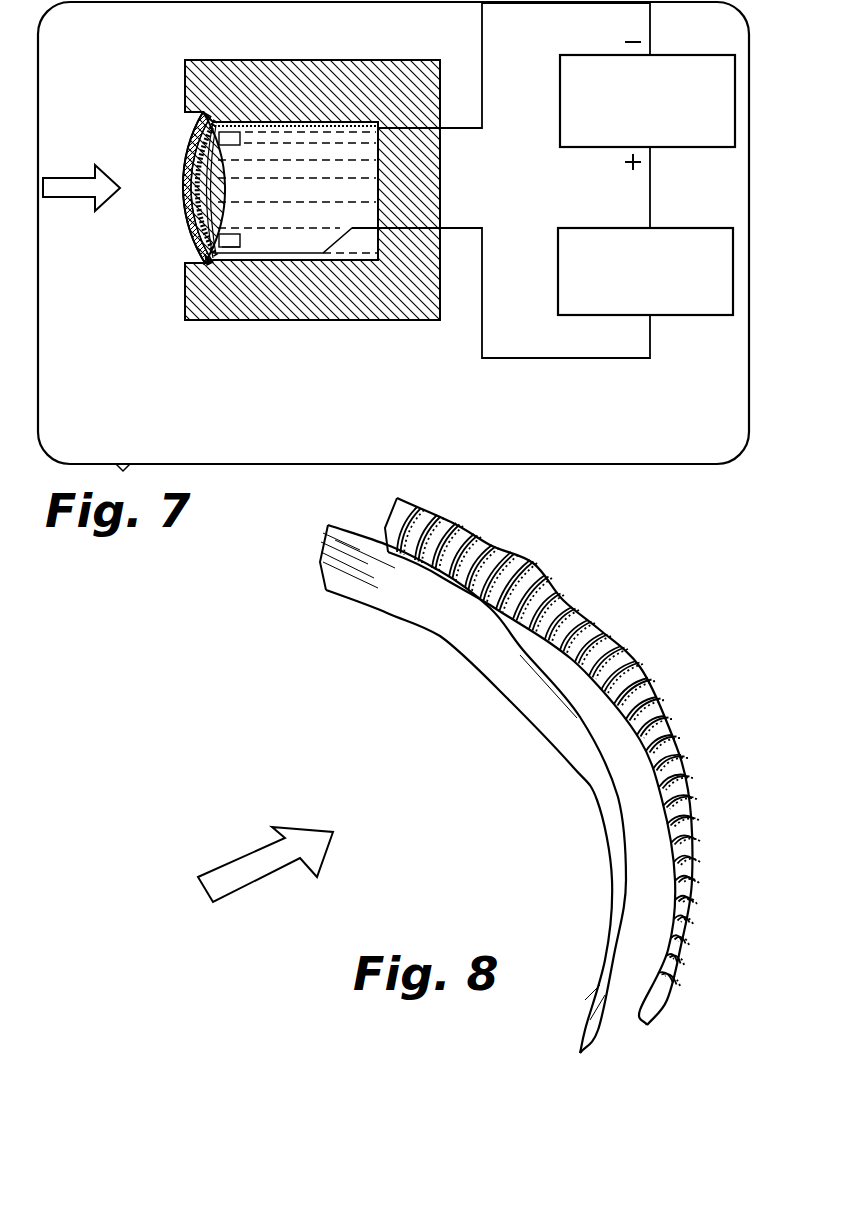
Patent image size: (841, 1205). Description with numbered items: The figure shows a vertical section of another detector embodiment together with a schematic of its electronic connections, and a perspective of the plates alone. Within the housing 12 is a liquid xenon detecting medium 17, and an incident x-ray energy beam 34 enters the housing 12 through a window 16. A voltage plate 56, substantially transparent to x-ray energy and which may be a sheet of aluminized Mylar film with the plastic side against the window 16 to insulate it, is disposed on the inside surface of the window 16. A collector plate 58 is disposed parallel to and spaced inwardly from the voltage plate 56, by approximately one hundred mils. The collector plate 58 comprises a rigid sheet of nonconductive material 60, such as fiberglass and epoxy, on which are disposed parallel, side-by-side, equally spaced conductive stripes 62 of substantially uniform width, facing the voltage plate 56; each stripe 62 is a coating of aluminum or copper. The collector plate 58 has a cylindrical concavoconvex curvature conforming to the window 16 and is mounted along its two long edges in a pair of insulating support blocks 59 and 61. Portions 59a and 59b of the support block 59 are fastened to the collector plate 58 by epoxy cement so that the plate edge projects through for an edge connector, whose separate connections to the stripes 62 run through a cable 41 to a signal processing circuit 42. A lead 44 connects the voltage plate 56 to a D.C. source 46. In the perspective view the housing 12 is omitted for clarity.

In FIG. 7, the housing 12 is at (316, 320).
In FIG. 7, the window 16 is at (200, 136).
In FIG. 7, the liquid xenon detecting medium 17 is at (328, 195).
In FIG. 7, the incident x-ray energy beam 34 is at (73, 178).
In FIG. 8, the incident x-ray energy beam 34 is at (247, 855).
In FIG. 7, the cable 41 is at (482, 345).
In FIG. 7, the signal processing circuit 42 is at (695, 318).
In FIG. 7, the lead 44 is at (482, 28).
In FIG. 7, the D.C. source 46 is at (703, 54).
In FIG. 7, the voltage plate 56 is at (190, 185).
In FIG. 8, the voltage plate 56 is at (590, 1032).
In FIG. 7, the collector plate 58 is at (215, 183).
In FIG. 8, the collector plate 58 is at (668, 997).
In FIG. 7, the support block 59 is at (238, 152).
In FIG. 7, the portion of support block 59a is at (205, 248).
In FIG. 7, the portion of support block 59b is at (245, 237).
In FIG. 8, the sheet of nonconductive material 60 is at (683, 962).
In FIG. 7, the support block 61 is at (220, 126).
In FIG. 7, the stripes 62 is at (192, 207).
In FIG. 8, the stripes 62 is at (530, 580).